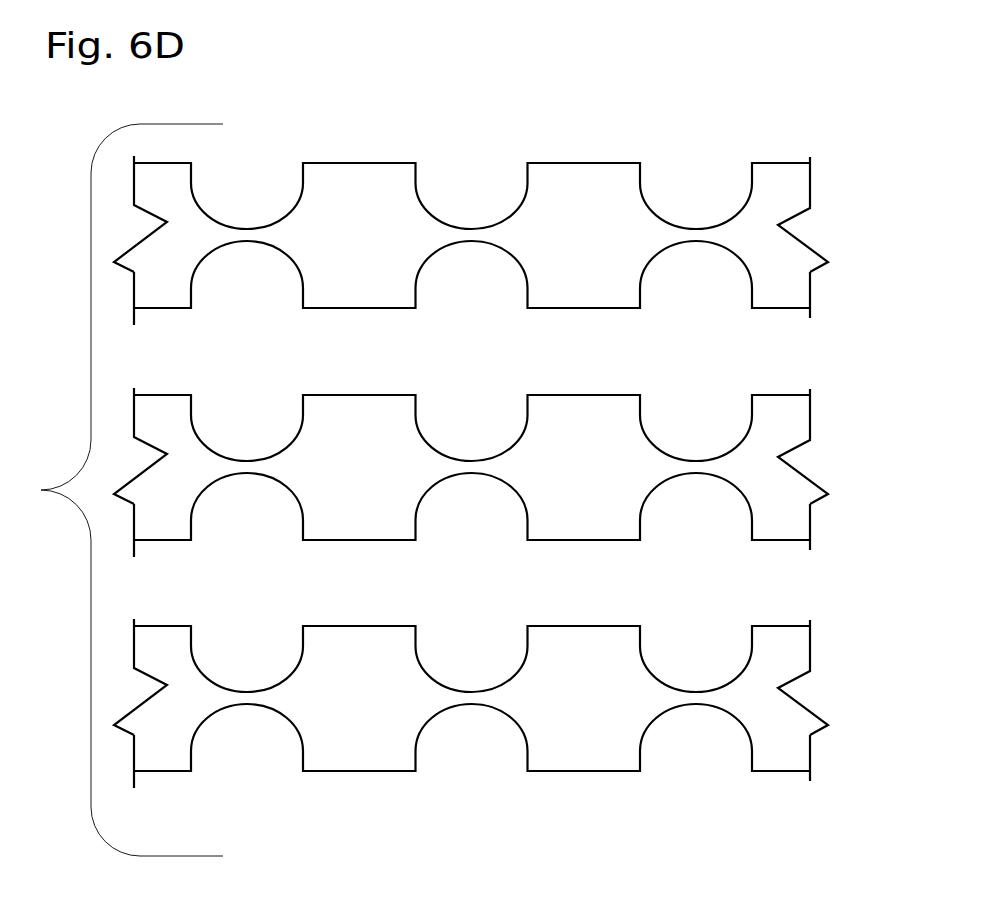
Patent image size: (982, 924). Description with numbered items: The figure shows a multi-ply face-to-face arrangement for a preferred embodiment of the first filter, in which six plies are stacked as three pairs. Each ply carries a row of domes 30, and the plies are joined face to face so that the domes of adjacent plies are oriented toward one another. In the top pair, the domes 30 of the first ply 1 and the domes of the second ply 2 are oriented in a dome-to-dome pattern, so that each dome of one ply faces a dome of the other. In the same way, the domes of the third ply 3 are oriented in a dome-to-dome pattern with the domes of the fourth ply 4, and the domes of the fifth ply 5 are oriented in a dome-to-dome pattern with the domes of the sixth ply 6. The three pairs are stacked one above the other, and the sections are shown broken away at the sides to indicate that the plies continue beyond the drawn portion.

The first ply 1 is at (797, 156).
The second ply 2 is at (793, 317).
The third ply 3 is at (487, 430).
The fourth ply 4 is at (497, 541).
The fifth ply 5 is at (487, 660).
The sixth ply 6 is at (497, 774).
The domes 30 is at (709, 283).